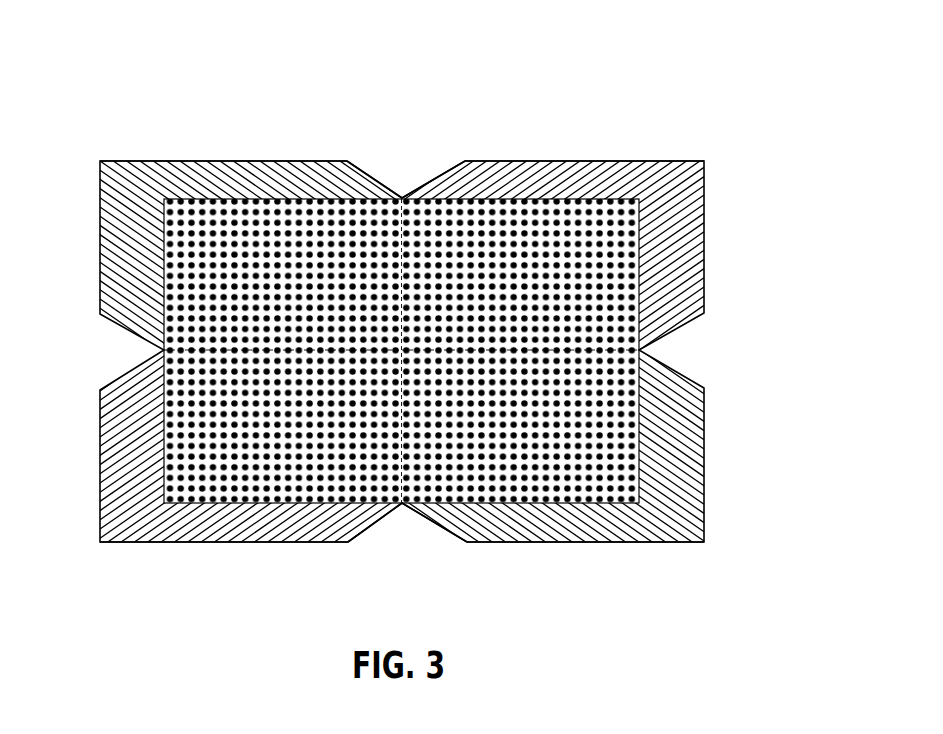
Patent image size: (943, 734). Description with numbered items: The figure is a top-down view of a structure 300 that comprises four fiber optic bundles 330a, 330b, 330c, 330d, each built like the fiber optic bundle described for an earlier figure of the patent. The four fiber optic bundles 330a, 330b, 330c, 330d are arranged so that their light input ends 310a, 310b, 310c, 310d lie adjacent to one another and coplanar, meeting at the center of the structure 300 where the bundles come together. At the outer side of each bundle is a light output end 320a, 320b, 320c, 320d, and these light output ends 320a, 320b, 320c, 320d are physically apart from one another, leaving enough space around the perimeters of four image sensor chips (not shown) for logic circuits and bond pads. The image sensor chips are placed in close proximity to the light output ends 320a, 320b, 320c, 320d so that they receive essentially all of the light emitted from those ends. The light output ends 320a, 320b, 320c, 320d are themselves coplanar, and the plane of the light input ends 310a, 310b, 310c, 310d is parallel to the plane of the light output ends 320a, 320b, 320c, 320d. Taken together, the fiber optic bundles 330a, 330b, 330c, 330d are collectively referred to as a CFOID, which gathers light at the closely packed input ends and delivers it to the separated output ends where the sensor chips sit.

The structure 300 is at (643, 63).
The light input end 310a is at (347, 197).
The light input end 310b is at (412, 197).
The light input end 310c is at (438, 503).
The light input end 310d is at (372, 503).
The light output end 320a is at (163, 161).
The light output end 320b is at (571, 161).
The light output end 320c is at (598, 542).
The light output end 320d is at (228, 542).
The fiber optic bundle 330a is at (110, 243).
The fiber optic bundle 330b is at (687, 215).
The fiber optic bundle 330c is at (690, 437).
The fiber optic bundle 330d is at (110, 472).